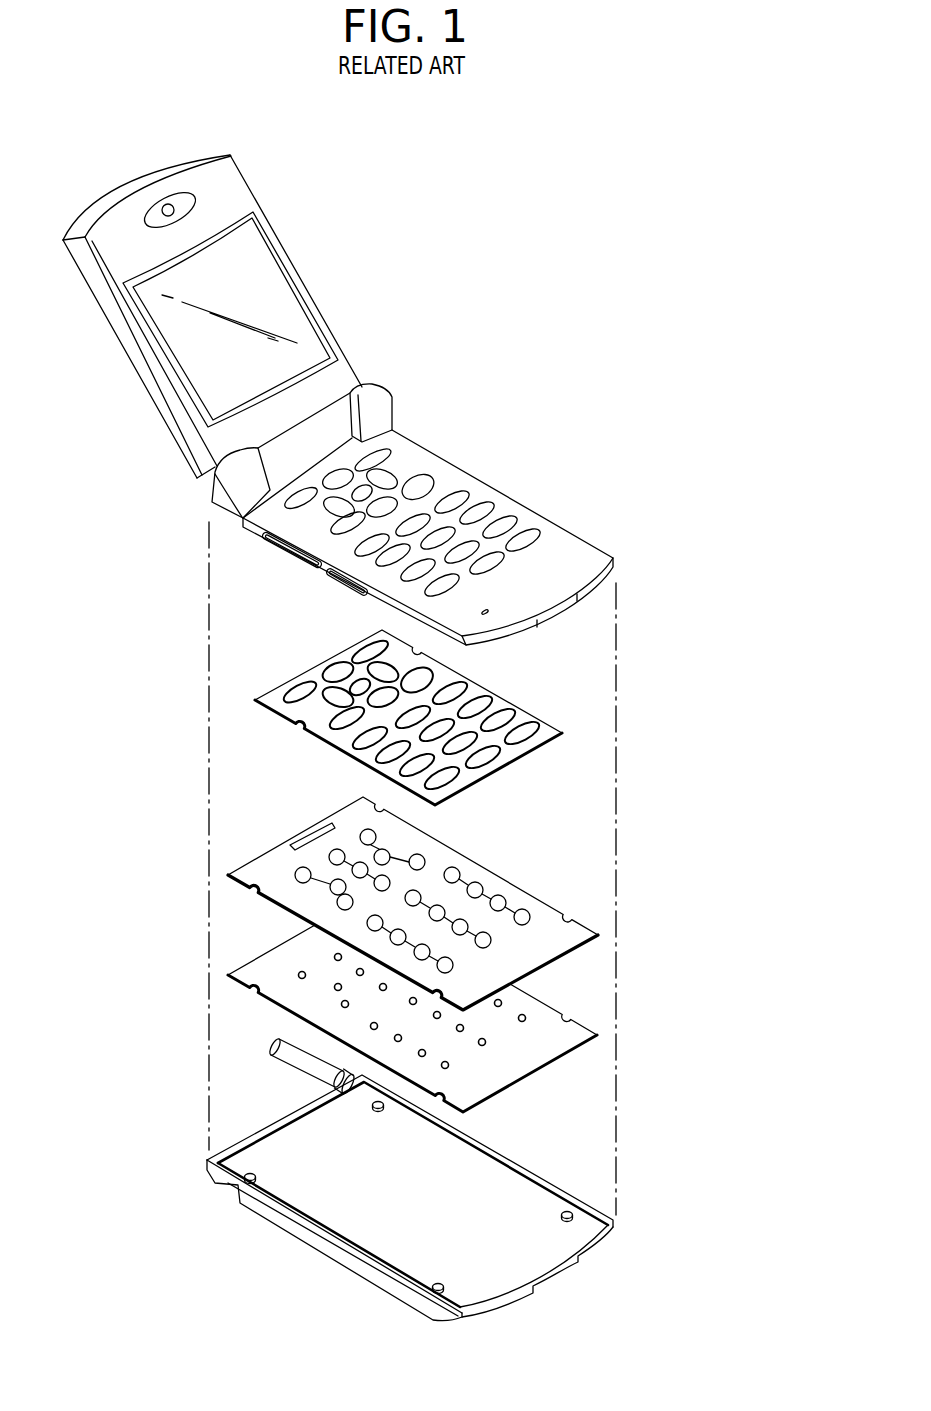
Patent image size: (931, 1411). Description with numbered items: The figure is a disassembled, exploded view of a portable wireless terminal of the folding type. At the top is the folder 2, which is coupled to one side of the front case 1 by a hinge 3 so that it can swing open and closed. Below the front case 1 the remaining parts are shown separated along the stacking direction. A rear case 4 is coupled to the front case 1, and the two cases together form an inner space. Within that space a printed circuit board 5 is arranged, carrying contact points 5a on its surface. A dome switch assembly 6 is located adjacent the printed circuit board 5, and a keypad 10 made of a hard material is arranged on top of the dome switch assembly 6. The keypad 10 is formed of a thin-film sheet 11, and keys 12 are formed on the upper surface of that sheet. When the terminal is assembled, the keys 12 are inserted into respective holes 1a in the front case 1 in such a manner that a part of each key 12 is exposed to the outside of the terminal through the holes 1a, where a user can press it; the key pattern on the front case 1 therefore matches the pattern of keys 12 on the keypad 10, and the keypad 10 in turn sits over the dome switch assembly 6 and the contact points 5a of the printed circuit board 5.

The front case 1 is at (492, 472).
The holes 1a is at (428, 486).
The folder 2 is at (135, 332).
The hinge 3 is at (225, 492).
The rear case 4 is at (238, 1182).
The printed circuit board 5 is at (543, 1020).
The contact points 5a is at (302, 972).
The dome switch assembly 6 is at (455, 871).
The keypad 10 is at (322, 758).
The thin-film sheet 11 is at (552, 718).
The keys 12 is at (485, 699).